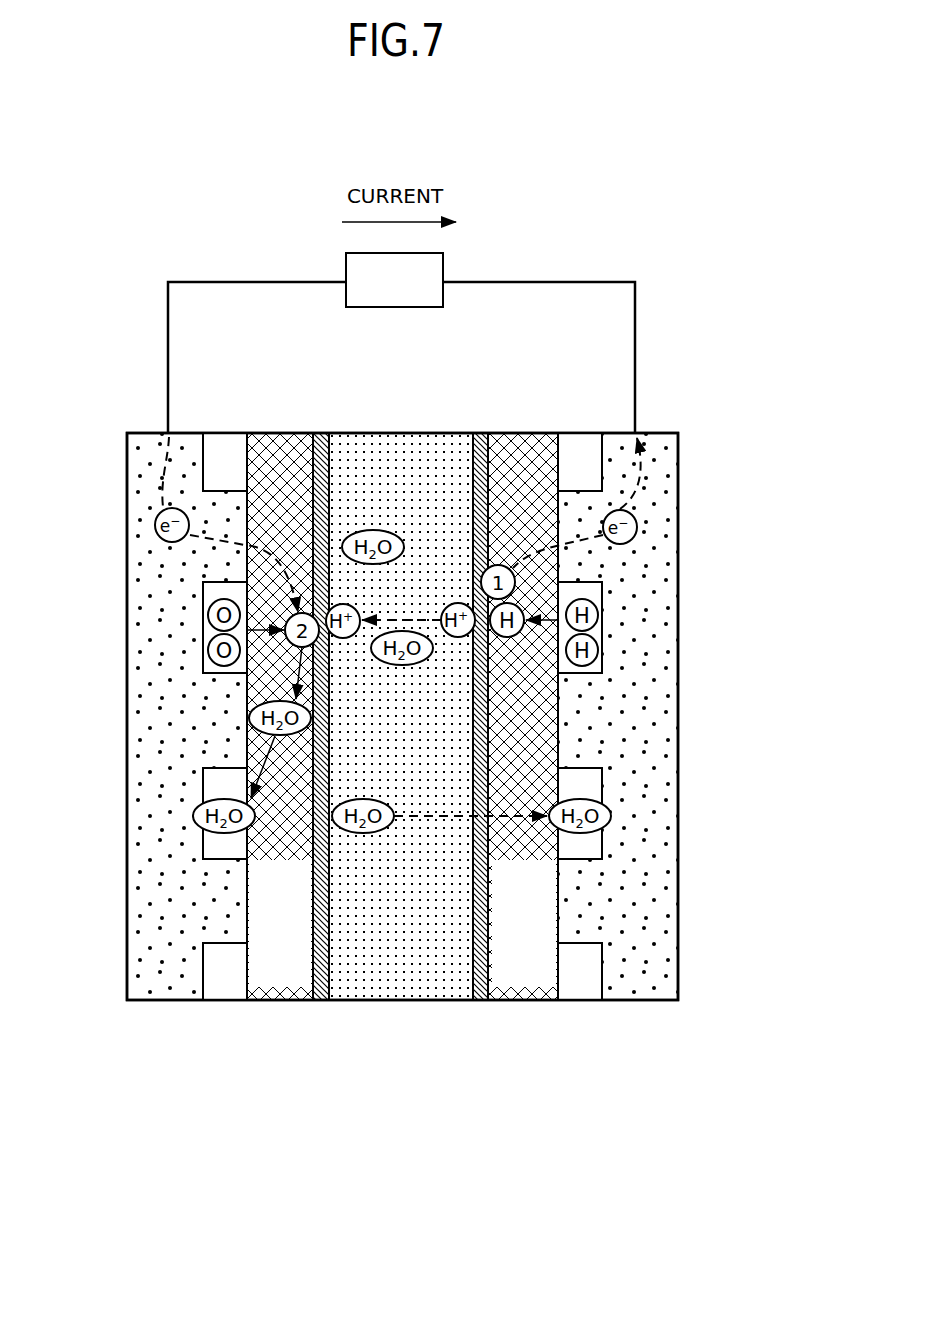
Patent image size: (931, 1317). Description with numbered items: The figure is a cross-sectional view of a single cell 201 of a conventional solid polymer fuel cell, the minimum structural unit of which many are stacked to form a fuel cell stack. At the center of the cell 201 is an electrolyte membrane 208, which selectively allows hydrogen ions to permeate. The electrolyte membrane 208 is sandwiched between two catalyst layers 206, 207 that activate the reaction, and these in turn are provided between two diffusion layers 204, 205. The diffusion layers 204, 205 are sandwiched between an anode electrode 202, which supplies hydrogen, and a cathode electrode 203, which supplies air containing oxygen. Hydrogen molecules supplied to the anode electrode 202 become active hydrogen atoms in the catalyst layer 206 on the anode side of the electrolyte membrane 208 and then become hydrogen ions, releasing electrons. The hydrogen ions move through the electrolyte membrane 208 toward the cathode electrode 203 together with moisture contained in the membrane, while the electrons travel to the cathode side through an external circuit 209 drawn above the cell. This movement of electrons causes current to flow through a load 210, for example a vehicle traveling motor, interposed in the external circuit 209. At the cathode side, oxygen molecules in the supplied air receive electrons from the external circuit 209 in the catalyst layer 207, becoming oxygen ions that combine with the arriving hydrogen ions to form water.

The cell 201 is at (740, 363).
The anode electrode 202 is at (678, 830).
The cathode electrode 203 is at (127, 830).
The diffusion layer 204 is at (527, 1000).
The diffusion layer 205 is at (277, 1000).
The catalyst layer 206 is at (487, 1000).
The catalyst layer 207 is at (320, 1000).
The electrolyte membrane 208 is at (400, 1000).
The external circuit 209 is at (562, 283).
The load 210 is at (397, 308).